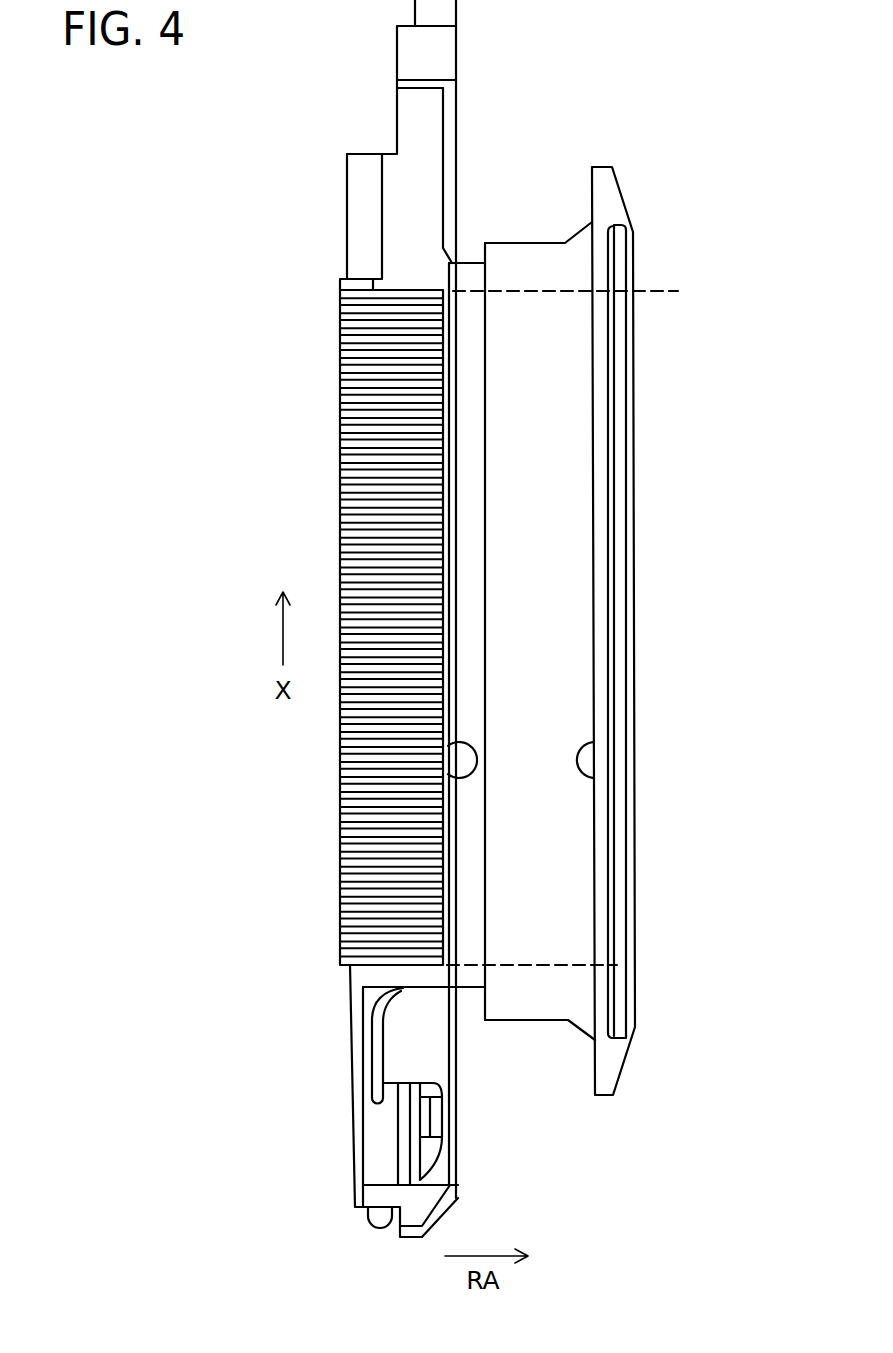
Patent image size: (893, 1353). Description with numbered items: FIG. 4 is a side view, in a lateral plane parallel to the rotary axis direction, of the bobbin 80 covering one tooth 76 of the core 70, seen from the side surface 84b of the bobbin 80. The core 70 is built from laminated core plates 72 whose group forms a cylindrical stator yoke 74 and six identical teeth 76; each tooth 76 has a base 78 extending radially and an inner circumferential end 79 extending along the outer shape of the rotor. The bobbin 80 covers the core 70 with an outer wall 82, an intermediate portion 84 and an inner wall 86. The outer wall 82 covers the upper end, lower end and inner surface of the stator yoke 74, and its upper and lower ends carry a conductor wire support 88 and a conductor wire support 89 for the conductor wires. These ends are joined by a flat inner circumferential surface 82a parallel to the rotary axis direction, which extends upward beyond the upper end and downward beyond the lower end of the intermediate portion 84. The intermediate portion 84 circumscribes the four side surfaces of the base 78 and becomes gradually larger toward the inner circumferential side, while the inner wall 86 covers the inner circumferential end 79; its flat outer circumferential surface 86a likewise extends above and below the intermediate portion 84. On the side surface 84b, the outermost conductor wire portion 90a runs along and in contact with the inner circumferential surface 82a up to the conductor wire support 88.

The core 70 is at (318, 297).
The core plates 72 is at (352, 348).
The stator yoke 74 is at (352, 440).
The tooth 76 is at (558, 288).
The base 78 is at (582, 290).
The inner circumferential end 79 is at (620, 292).
The bobbin 80 is at (343, 118).
The outer wall 82 is at (388, 230).
The inner circumferential surface 82a is at (457, 105).
The intermediate portion 84 is at (518, 253).
The side surface 84b is at (553, 705).
The inner wall 86 is at (610, 193).
The outer circumferential surface 86a is at (592, 253).
The conductor wire support 88 is at (407, 57).
The conductor wire support 89 is at (378, 1197).
The conductor wire portion 90a is at (465, 410).